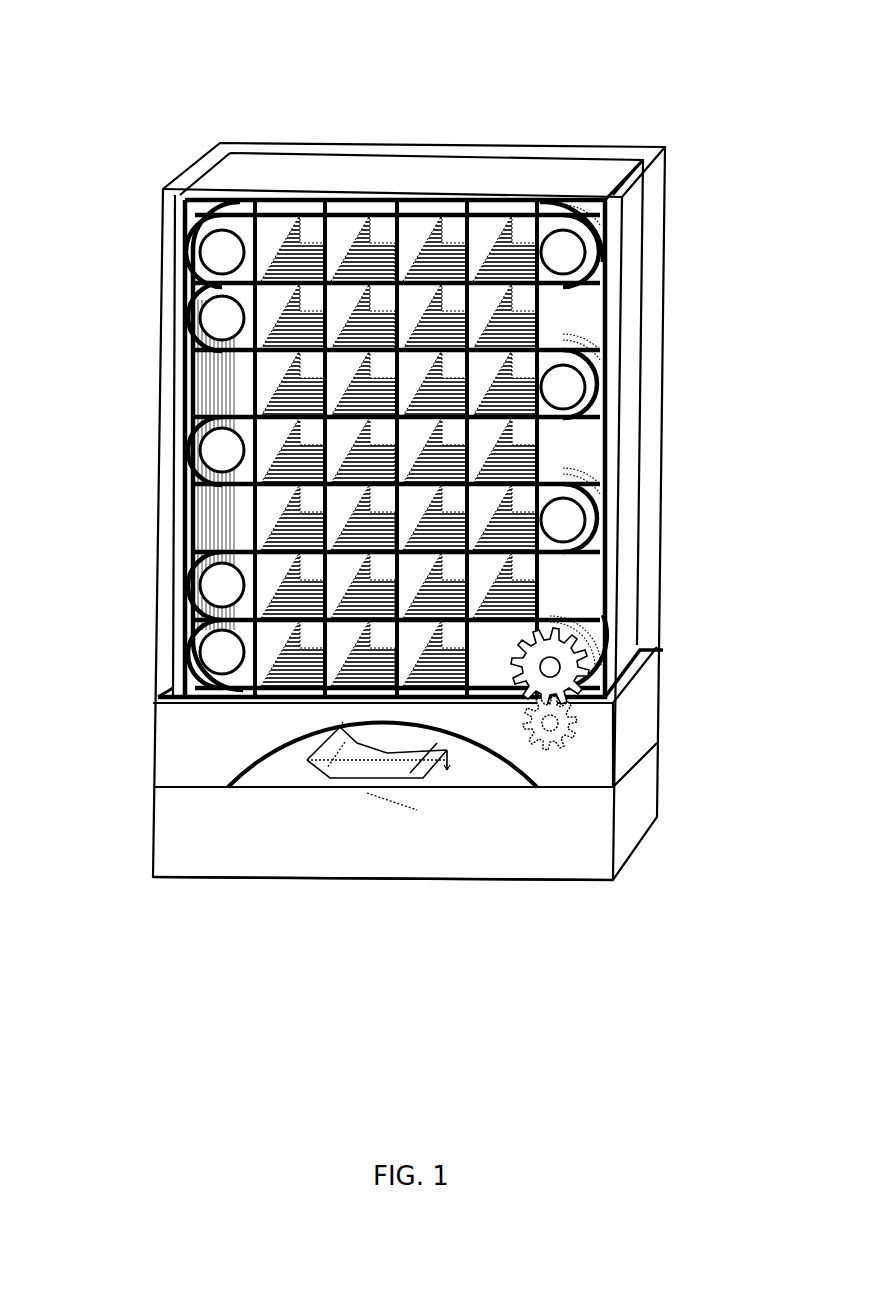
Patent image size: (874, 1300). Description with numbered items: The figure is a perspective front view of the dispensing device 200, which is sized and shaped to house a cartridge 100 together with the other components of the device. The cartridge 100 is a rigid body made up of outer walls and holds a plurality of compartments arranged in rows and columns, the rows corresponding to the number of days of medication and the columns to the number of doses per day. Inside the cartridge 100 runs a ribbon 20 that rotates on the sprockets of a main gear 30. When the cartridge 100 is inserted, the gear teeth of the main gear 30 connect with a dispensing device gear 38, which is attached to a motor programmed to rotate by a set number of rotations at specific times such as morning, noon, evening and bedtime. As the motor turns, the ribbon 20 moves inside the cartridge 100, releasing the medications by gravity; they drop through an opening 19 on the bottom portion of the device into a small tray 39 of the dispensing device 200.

The dispensing device 200 is at (143, 141).
The cartridge 100 is at (612, 287).
The ribbon 20 is at (240, 417).
The main gear 30 is at (602, 652).
The dispensing device gear 38 is at (588, 727).
The opening 19 is at (408, 753).
The tray 39 is at (347, 767).